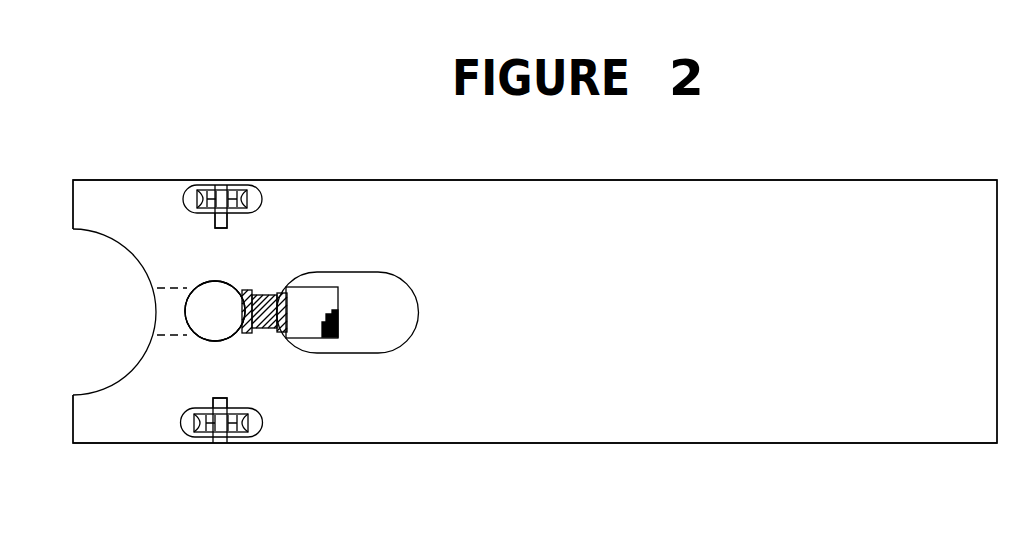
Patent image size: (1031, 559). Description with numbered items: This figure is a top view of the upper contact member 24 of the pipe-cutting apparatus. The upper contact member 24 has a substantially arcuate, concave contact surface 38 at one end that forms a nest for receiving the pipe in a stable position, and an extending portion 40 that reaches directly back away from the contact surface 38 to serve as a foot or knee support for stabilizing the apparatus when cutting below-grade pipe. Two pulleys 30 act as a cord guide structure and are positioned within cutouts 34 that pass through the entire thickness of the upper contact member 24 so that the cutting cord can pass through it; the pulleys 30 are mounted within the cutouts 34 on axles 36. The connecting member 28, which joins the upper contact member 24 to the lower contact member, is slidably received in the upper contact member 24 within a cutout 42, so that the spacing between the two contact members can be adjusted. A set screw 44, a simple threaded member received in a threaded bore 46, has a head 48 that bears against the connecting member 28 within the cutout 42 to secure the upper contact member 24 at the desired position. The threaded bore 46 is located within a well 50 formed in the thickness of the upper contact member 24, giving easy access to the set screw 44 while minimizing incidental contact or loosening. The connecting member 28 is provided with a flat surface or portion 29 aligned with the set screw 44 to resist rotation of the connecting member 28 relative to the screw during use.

The upper contact member 24 is at (165, 190).
The connecting member 28 is at (207, 318).
The flat surface or portion 29 is at (243, 311).
The pulleys 30 is at (240, 192).
The cutouts 34 is at (215, 192).
The axles 36 is at (229, 223).
The contact surface 38 is at (133, 255).
The extending portion 40 is at (922, 327).
The cutout 42 is at (190, 306).
The set screw 44 is at (308, 312).
The threaded bore 46 is at (300, 342).
The head 48 is at (244, 311).
The well 50 is at (405, 278).